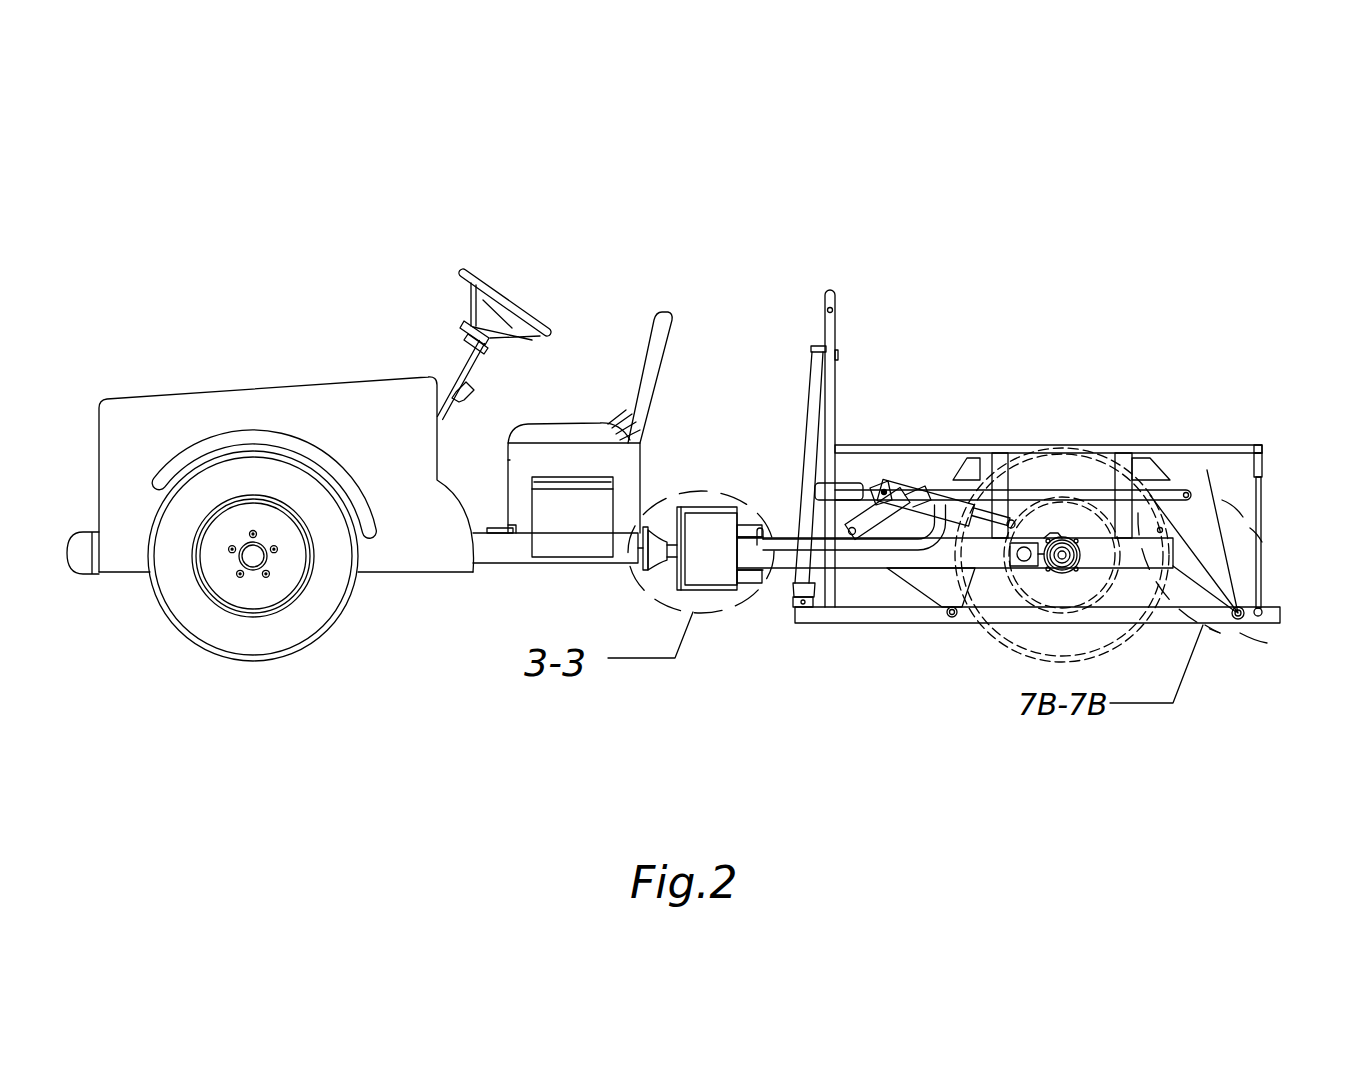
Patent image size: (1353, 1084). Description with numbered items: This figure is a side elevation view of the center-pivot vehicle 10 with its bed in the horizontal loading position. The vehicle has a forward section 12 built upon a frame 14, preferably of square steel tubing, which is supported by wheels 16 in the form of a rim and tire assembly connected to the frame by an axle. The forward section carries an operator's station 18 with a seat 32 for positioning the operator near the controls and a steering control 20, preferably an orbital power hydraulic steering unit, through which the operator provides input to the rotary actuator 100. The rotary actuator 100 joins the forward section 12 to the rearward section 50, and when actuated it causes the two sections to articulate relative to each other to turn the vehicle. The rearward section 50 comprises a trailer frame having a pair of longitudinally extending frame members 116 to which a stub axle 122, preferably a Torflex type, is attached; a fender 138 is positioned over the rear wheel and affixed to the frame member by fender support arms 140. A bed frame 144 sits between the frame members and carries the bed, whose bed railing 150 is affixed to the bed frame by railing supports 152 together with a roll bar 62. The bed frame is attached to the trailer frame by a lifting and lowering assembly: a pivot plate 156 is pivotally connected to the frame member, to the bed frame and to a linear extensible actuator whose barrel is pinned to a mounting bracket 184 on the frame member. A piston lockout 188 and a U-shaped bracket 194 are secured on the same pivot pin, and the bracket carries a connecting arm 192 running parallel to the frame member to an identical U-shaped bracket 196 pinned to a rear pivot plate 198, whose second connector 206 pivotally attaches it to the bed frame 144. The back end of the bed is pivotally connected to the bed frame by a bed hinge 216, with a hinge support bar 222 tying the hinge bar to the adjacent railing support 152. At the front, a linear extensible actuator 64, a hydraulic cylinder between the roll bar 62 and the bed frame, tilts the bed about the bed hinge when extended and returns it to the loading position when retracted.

The center-pivot vehicle 10 is at (637, 133).
The forward section 12 is at (150, 375).
The frame 14 is at (500, 556).
The wheels 16 is at (318, 620).
The operator's station 18 is at (575, 310).
The steering control 20 is at (462, 393).
The seat 32 is at (650, 336).
The rearward section 50 is at (1100, 248).
The roll bar 62 is at (829, 290).
The linear extensible actuator 64 is at (813, 412).
The rotary actuator 100 is at (707, 497).
The longitudinally extending frame member 116 is at (787, 558).
The axle 122 is at (1037, 560).
The fender 138 is at (1152, 460).
The fender support arms 140 is at (998, 454).
The bed frame 144 is at (1266, 611).
The bed railing 150 is at (1259, 445).
The railing supports 152 is at (1262, 466).
The pivot plate 156 is at (920, 588).
The mounting bracket 184 is at (1032, 523).
The piston lockout 188 is at (820, 483).
The connecting arm 192 is at (948, 490).
The U-shaped bracket 194 is at (907, 490).
The U-shaped bracket 196 is at (1180, 490).
The pivot plate 198 is at (1222, 572).
The second connector 206 is at (1250, 633).
The bed hinge 216 is at (1272, 595).
The hinge support bar 222 is at (1262, 504).